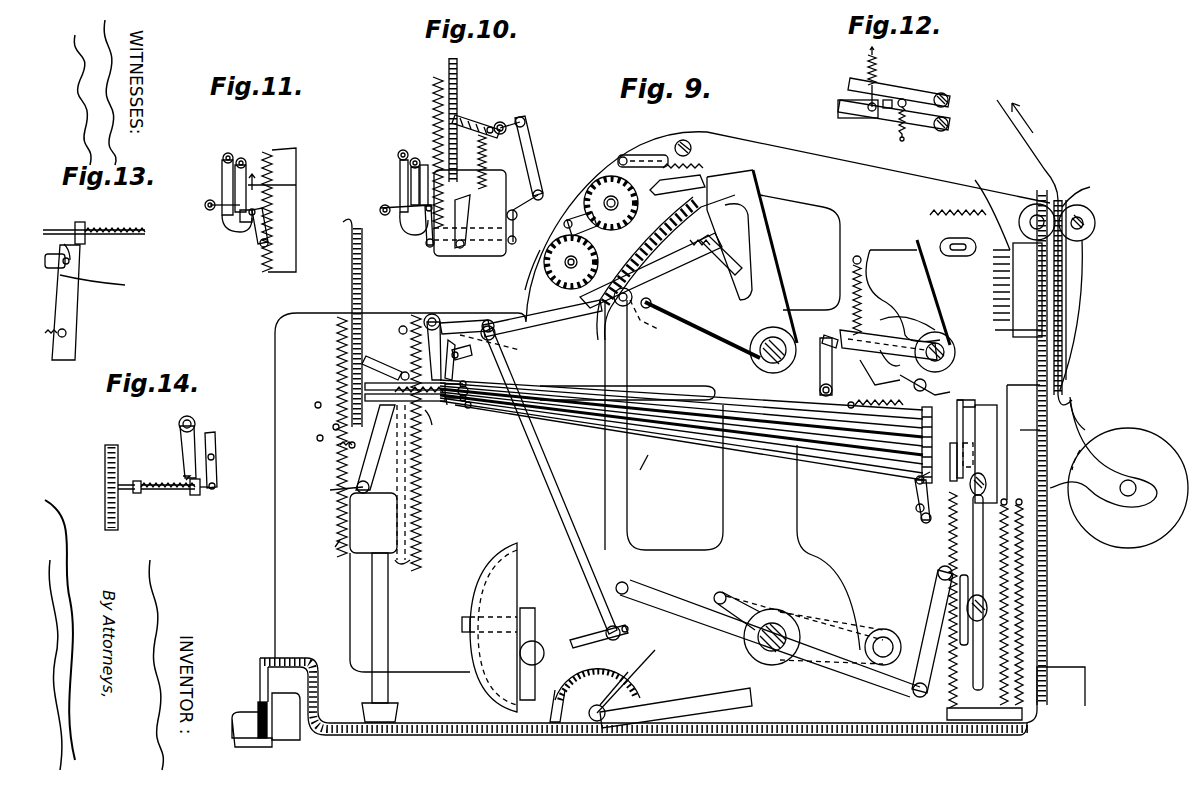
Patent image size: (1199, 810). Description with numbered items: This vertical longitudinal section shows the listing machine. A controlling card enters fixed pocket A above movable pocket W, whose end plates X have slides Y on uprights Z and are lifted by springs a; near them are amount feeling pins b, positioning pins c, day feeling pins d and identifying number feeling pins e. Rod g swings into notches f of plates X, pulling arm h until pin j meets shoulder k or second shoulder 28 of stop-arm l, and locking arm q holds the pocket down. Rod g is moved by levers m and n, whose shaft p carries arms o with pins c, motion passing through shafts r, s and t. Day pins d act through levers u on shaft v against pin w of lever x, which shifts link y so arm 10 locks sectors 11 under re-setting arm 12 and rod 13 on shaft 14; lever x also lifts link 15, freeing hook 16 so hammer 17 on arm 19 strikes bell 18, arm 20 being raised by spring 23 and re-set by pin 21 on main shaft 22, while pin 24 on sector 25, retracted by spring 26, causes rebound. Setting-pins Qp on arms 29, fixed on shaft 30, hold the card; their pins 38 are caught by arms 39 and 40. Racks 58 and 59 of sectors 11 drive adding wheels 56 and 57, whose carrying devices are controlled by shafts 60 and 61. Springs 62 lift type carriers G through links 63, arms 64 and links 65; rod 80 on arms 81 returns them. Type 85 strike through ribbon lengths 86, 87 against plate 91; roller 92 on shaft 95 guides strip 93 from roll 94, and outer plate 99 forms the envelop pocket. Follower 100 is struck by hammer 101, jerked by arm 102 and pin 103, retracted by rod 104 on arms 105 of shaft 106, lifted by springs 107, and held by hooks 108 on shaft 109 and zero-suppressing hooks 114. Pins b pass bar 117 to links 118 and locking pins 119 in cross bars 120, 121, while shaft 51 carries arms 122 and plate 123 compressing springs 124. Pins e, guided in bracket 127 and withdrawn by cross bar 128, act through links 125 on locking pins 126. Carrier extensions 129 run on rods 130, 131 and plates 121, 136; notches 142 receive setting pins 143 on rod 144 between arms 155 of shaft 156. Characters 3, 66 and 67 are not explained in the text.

In FIG. 9, the fixed card pocket A is at (352, 297).
In FIG. 10, the fixed card pocket A is at (460, 63).
In FIG. 14, the fixed card pocket A is at (105, 510).
In FIG. 9, the notches f is at (340, 352).
In FIG. 10, the notches f is at (432, 118).
In FIG. 11, the notches f is at (243, 163).
In FIG. 9, the springs a is at (421, 443).
In FIG. 9, the amount feeling pins b is at (365, 386).
In FIG. 9, the identifying number feeling pins e is at (442, 407).
In FIG. 13, the identifying number feeling pins e is at (95, 253).
In FIG. 9, the arms o is at (385, 350).
In FIG. 10, the arms o is at (496, 112).
In FIG. 9, the shaft s is at (310, 401).
In FIG. 10, the shaft s is at (400, 152).
In FIG. 11, the shaft s is at (224, 156).
In FIG. 9, the shaft r is at (326, 425).
In FIG. 10, the shaft r is at (413, 158).
In FIG. 11, the shaft r is at (240, 158).
In FIG. 9, the shaft t is at (311, 435).
In FIG. 10, the shaft t is at (380, 210).
In FIG. 11, the shaft t is at (206, 203).
In FIG. 10, the swinging arm l is at (400, 178).
In FIG. 11, the swinging arm l is at (222, 180).
In FIG. 10, the pin j is at (411, 190).
In FIG. 10, the locking arm q is at (385, 206).
In FIG. 11, the locking arm q is at (278, 184).
In FIG. 10, the arm h is at (424, 165).
In FIG. 11, the arm h is at (222, 226).
In FIG. 10, the shoulder k is at (410, 232).
In FIG. 11, the shoulder k is at (240, 225).
In FIG. 10, the transverse rod g is at (428, 252).
In FIG. 11, the transverse rod g is at (260, 250).
In FIG. 10, the positioning pins c is at (468, 118).
In FIG. 10, the shaft p is at (505, 122).
In FIG. 10, the lever n is at (521, 152).
In FIG. 10, the lever m is at (522, 219).
In FIG. 9, the end plates X is at (333, 487).
In FIG. 10, the end plates X is at (470, 213).
In FIG. 11, the end plates X is at (279, 210).
In FIG. 9, the slides Y is at (345, 538).
In FIG. 9, the uprights Z is at (372, 598).
In FIG. 9, the movable pocket W is at (331, 441).
In FIG. 9, the levers u is at (452, 342).
In FIG. 14, the levers u is at (217, 460).
In FIG. 9, the short shaft v is at (465, 357).
In FIG. 14, the short shaft v is at (214, 460).
In FIG. 9, the pin w is at (495, 349).
In FIG. 9, the lever x is at (488, 320).
In FIG. 9, the link y is at (542, 314).
In FIG. 14, the day perforation feeling pins d is at (128, 484).
In FIG. 9, the type carriers G is at (988, 206).
In FIG. 13, the setting-pins Qp is at (100, 282).
In FIG. 9, the pivot 3 is at (626, 316).
In FIG. 9, the arm 10 is at (651, 270).
In FIG. 9, the sectors 11 is at (722, 272).
In FIG. 9, the re-setting arm 12 is at (700, 340).
In FIG. 9, the rod 13 is at (656, 325).
In FIG. 9, the sector shaft 14 is at (770, 362).
In FIG. 9, the link 15 is at (548, 462).
In FIG. 9, the hook 16 is at (545, 648).
In FIG. 9, the hammer 17 is at (545, 618).
In FIG. 9, the bell 18 is at (489, 627).
In FIG. 9, the lever arm 19 is at (597, 684).
In FIG. 9, the lever arm 20 is at (735, 698).
In FIG. 9, the pin 21 is at (714, 602).
In FIG. 9, the main shaft 22 is at (772, 652).
In FIG. 9, the spring 23 is at (650, 672).
In FIG. 9, the pin 24 is at (555, 722).
In FIG. 9, the sector 25 is at (590, 722).
In FIG. 9, the spring 26 is at (640, 640).
In FIG. 10, the second shoulder 28 is at (425, 240).
In FIG. 11, the second shoulder 28 is at (256, 240).
In FIG. 9, the setting arms 29 is at (365, 452).
In FIG. 13, the setting arms 29 is at (72, 300).
In FIG. 9, the shaft 30 is at (350, 510).
In FIG. 12, the pins 38 is at (878, 118).
In FIG. 13, the pins 38 is at (70, 260).
In FIG. 9, the arms 39 is at (407, 455).
In FIG. 12, the arms 39 is at (897, 120).
In FIG. 12, the second locking arm 40 is at (905, 92).
In FIG. 9, the short shaft 51 is at (430, 315).
In FIG. 14, the short shaft 51 is at (193, 420).
In FIG. 9, the adding wheels 56 is at (571, 262).
In FIG. 9, the adding wheels 57 is at (611, 203).
In FIG. 9, the rack 58 is at (650, 267).
In FIG. 9, the rack 59 is at (730, 176).
In FIG. 9, the shaft 60 is at (566, 220).
In FIG. 9, the shaft 61 is at (622, 155).
In FIG. 9, the springs 62 is at (1030, 590).
In FIG. 9, the links 63 is at (932, 631).
In FIG. 9, the arms 64 is at (680, 592).
In FIG. 9, the links 65 is at (654, 464).
In FIG. 9, the spring 66 is at (618, 178).
In FIG. 9, the arm 67 is at (525, 270).
In FIG. 9, the rod 80 is at (890, 635).
In FIG. 9, the arms 81 is at (860, 625).
In FIG. 9, the type 85 is at (993, 290).
In FIG. 9, the ribbon length 86 is at (1020, 243).
In FIG. 9, the ribbon length 87 is at (1075, 258).
In FIG. 9, the inner plate 91 is at (1075, 305).
In FIG. 9, the guide roller 92 is at (1037, 204).
In FIG. 9, the recording strip 93 is at (1040, 142).
In FIG. 9, the roll 94 is at (1150, 525).
In FIG. 9, the shaft 95 is at (1065, 205).
In FIG. 9, the outer plate 99 is at (1068, 283).
In FIG. 9, the follower 100 is at (978, 245).
In FIG. 9, the hammer 101 is at (908, 292).
In FIG. 9, the arm 102 is at (811, 366).
In FIG. 9, the pin 103 is at (870, 384).
In FIG. 9, the transverse rod 104 is at (890, 338).
In FIG. 9, the arms 105 is at (930, 325).
In FIG. 9, the shaft 106 is at (950, 355).
In FIG. 9, the springs 107 is at (852, 290).
In FIG. 9, the hooks 108 is at (817, 333).
In FIG. 9, the shaft 109 is at (818, 392).
In FIG. 9, the supplementary hooks 114 is at (931, 381).
In FIG. 9, the supporting bar 117 is at (471, 402).
In FIG. 9, the links 118 is at (540, 388).
In FIG. 9, the locking pins 119 is at (950, 412).
In FIG. 9, the cross bar 120 is at (846, 465).
In FIG. 9, the cross bar 121 is at (1000, 410).
In FIG. 9, the arms 122 is at (438, 322).
In FIG. 14, the arms 122 is at (196, 438).
In FIG. 9, the transverse plate 123 is at (482, 408).
In FIG. 14, the transverse plate 123 is at (184, 476).
In FIG. 9, the spiral springs 124 is at (410, 380).
In FIG. 14, the spiral springs 124 is at (165, 490).
In FIG. 9, the links 125 is at (545, 412).
In FIG. 9, the locking pins 126 is at (1025, 441).
In FIG. 9, the bracket 127 is at (441, 434).
In FIG. 13, the cross bar 128 is at (85, 230).
In FIG. 9, the vertical extension 129 is at (990, 640).
In FIG. 9, the guide rod 130 is at (988, 480).
In FIG. 9, the guide rod 131 is at (1028, 604).
In FIG. 9, the plate 136 is at (1025, 656).
In FIG. 9, the notches 142 is at (945, 555).
In FIG. 9, the setting pin 143 is at (915, 488).
In FIG. 9, the rod 144 is at (915, 480).
In FIG. 9, the arms 155 is at (920, 516).
In FIG. 9, the shaft 156 is at (916, 512).